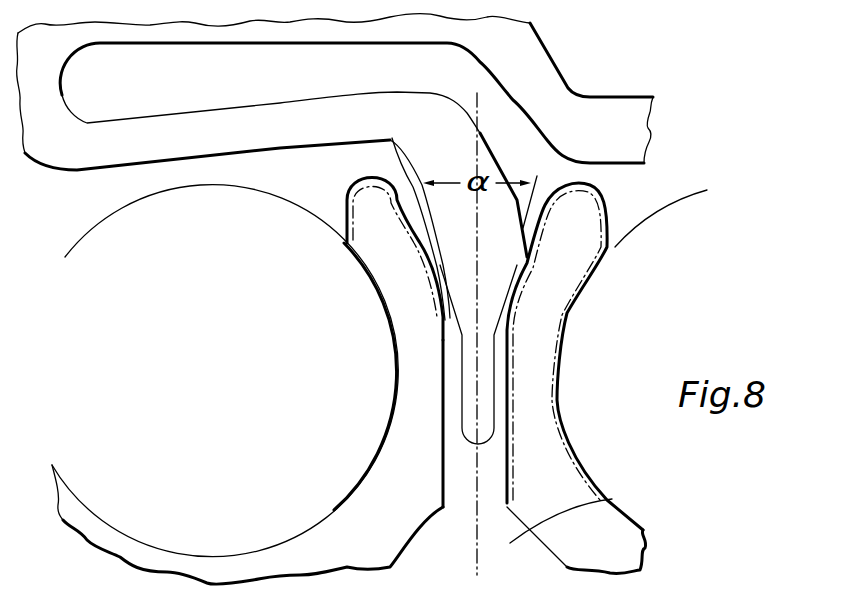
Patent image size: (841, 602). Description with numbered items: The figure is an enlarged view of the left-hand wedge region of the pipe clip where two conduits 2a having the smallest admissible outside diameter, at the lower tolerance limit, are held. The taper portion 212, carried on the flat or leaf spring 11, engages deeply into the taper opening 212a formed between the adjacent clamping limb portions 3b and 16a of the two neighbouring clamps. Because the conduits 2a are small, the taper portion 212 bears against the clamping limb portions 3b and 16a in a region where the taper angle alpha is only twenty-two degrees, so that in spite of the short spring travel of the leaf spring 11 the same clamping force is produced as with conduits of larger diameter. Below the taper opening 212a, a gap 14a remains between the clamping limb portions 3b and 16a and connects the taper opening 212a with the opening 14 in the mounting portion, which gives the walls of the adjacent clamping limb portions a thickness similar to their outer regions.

The leaf spring 11 is at (185, 128).
The taper opening 212a is at (392, 138).
The taper portion 212 is at (498, 262).
The conduits 2a is at (173, 189).
The clamping limb portion 3b is at (418, 360).
The clamping limb portion 16a is at (529, 374).
The gap 14a is at (445, 487).
The opening 14 is at (612, 499).